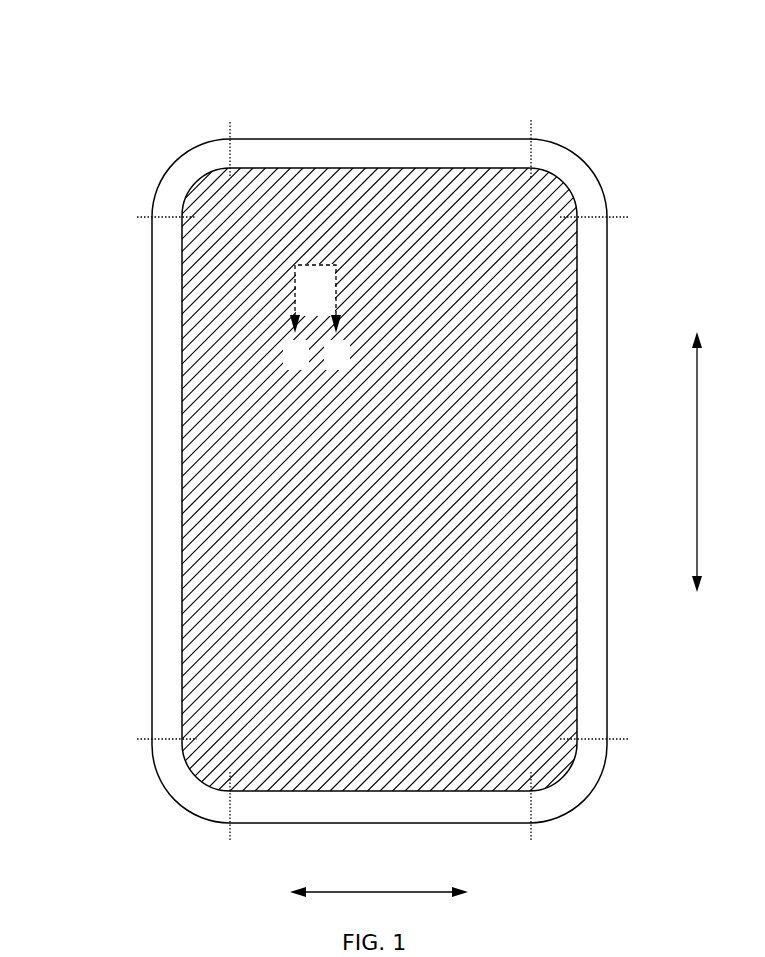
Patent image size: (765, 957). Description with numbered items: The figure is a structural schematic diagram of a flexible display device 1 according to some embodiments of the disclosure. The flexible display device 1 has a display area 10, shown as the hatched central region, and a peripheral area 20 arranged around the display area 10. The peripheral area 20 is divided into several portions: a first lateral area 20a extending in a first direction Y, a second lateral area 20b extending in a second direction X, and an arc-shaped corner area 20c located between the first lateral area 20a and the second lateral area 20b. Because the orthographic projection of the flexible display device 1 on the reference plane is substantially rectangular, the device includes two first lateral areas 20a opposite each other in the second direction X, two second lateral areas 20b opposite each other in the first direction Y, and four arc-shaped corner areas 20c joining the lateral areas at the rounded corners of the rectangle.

The flexible display device 1 is at (49, 34).
The display area 10 is at (550, 665).
The peripheral area 20 is at (142, 90).
The first lateral area 20a is at (167, 251).
The second lateral area 20b is at (272, 150).
The arc-shaped corner area 20c is at (180, 183).